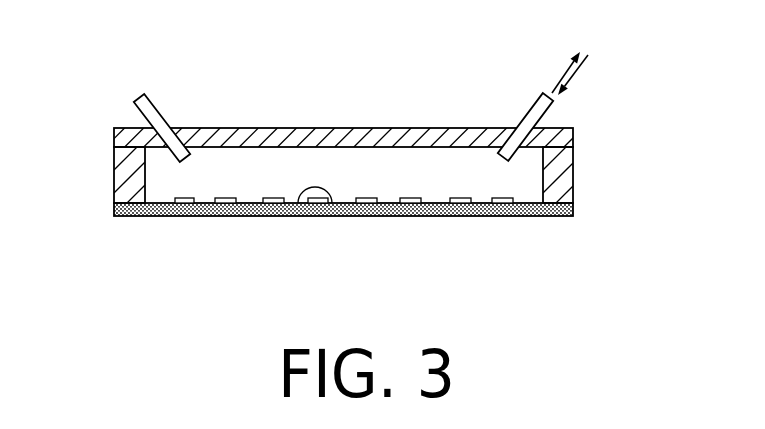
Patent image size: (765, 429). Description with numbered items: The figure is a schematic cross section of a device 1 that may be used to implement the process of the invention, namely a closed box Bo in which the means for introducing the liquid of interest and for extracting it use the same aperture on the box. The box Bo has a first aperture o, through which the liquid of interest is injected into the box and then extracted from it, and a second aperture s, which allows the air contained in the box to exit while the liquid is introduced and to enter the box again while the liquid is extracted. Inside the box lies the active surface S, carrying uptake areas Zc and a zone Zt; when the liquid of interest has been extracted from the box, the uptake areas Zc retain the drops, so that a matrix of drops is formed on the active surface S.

The analysis device 1 is at (288, 100).
The second aperture s is at (155, 113).
The housing Bo is at (345, 128).
The first aperture o is at (532, 112).
The uptake areas Zc is at (212, 204).
The test zone Zt is at (334, 207).
The active surface S is at (533, 212).